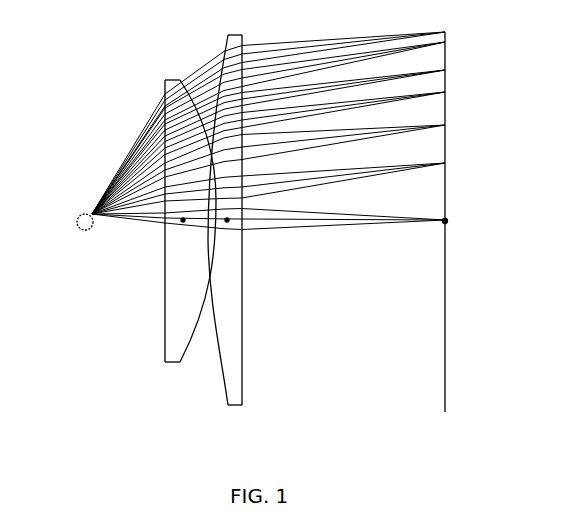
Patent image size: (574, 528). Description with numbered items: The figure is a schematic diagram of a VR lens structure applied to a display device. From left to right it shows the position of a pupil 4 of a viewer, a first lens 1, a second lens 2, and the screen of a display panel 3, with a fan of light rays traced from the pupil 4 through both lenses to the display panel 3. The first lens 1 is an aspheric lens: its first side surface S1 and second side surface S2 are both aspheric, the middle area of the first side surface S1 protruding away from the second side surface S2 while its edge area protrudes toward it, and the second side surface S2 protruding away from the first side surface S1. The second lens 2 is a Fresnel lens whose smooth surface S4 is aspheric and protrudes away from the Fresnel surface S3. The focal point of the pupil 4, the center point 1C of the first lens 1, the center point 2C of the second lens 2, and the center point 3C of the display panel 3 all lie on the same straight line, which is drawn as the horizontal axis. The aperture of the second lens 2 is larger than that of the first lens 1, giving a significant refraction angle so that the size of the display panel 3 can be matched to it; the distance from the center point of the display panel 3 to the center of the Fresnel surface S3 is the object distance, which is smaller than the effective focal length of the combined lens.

The first lens 1 is at (163, 254).
The second lens 2 is at (224, 241).
The display panel 3 is at (445, 347).
The pupil 4 is at (445, 228).
The center point of the first lens 1C is at (180, 224).
The center point of the second lens 2C is at (230, 223).
The center point of the display panel 3C is at (449, 225).
The first side surface S1 is at (141, 221).
The second side surface S2 is at (194, 221).
The Fresnel surface S3 is at (239, 220).
The smooth surface S4 is at (232, 345).